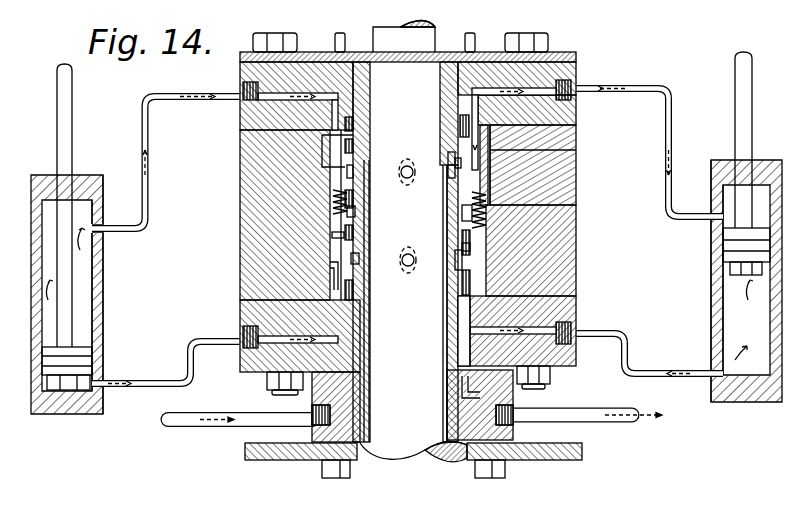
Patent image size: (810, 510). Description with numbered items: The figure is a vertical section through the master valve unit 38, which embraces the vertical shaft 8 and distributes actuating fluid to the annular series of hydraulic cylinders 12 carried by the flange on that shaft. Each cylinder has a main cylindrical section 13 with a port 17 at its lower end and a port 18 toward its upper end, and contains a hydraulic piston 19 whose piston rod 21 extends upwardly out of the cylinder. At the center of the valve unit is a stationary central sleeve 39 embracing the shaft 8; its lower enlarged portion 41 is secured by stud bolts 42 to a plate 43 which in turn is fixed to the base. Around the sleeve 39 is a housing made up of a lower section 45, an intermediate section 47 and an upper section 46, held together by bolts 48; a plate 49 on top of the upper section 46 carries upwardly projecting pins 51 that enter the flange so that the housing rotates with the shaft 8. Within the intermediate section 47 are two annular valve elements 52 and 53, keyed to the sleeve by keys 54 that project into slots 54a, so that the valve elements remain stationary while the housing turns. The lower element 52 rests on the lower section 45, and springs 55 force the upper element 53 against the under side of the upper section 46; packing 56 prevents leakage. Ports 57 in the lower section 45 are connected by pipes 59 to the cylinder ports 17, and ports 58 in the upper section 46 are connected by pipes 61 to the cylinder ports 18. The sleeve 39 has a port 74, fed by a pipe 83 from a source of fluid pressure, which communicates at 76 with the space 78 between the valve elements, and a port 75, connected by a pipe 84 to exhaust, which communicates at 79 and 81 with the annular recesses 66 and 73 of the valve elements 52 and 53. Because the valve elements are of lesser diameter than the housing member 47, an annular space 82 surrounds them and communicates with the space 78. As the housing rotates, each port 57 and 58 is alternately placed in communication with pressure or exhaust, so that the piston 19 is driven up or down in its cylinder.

The vertical shaft 8 is at (388, 36).
The hydraulic cylinder 12 is at (72, 415).
The main cylindrical section 13 is at (103, 283).
The port 17 is at (103, 388).
The port 18 is at (103, 228).
The hydraulic piston 19 is at (90, 352).
The piston rod 21 is at (72, 83).
The master valve unit 38 is at (206, 185).
The central sleeve 39 is at (450, 55).
The lower enlarged portion 41 is at (515, 397).
The stud bolt 42 is at (338, 478).
The plate 43 is at (264, 460).
The lower housing section 45 is at (576, 305).
The upper housing section 46 is at (560, 115).
The intermediate housing section 47 is at (560, 165).
The bolt 48 is at (540, 34).
The plate 49 is at (576, 53).
The pin 51 is at (338, 38).
The annular valve element 52 is at (490, 248).
The annular valve element 53 is at (490, 150).
The key 54 is at (413, 180).
The slot 54a is at (405, 159).
The spring 55 is at (333, 235).
The packing 56 is at (352, 125).
The port 57 is at (245, 333).
The port 58 is at (247, 105).
The pipe 59 is at (158, 384).
The pipe 61 is at (142, 120).
The annular recess 66 is at (359, 260).
The annular recess 73 is at (353, 171).
The port 74 is at (320, 422).
The port 75 is at (510, 422).
The communication opening 76 is at (355, 212).
The space 78 is at (332, 222).
The communication opening 79 is at (455, 256).
The communication opening 81 is at (450, 165).
The annular space 82 is at (330, 258).
The pipe 83 is at (186, 428).
The pipe 84 is at (615, 424).